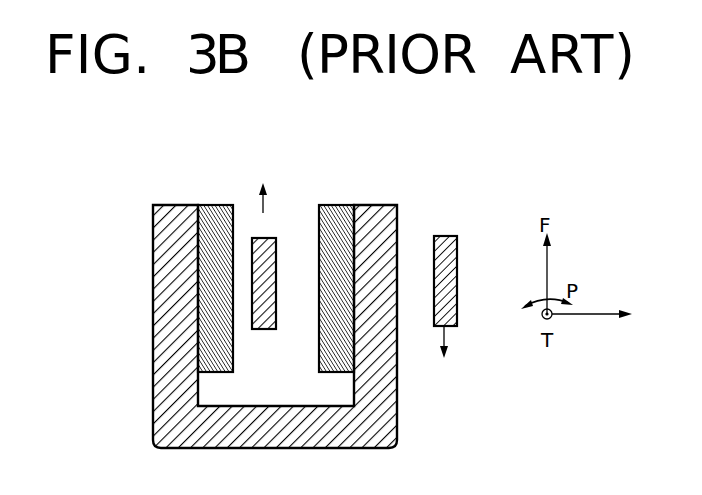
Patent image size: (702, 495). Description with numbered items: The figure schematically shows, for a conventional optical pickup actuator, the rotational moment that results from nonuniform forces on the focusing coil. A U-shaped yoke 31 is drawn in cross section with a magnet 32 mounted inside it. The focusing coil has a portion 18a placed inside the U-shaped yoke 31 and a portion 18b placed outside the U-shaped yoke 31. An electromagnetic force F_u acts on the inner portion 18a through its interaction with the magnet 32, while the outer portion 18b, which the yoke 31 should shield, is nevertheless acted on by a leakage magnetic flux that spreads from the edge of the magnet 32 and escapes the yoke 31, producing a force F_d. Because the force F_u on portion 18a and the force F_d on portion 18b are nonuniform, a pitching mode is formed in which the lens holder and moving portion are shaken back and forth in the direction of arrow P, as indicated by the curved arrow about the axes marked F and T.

The U-shaped yoke 31 is at (170, 204).
The magnet 32 is at (331, 204).
The portion of the focusing coil placed inside the U-shaped yoke 18a is at (276, 250).
The portion of the focusing coil placed outside the U-shaped yoke 18b is at (444, 237).